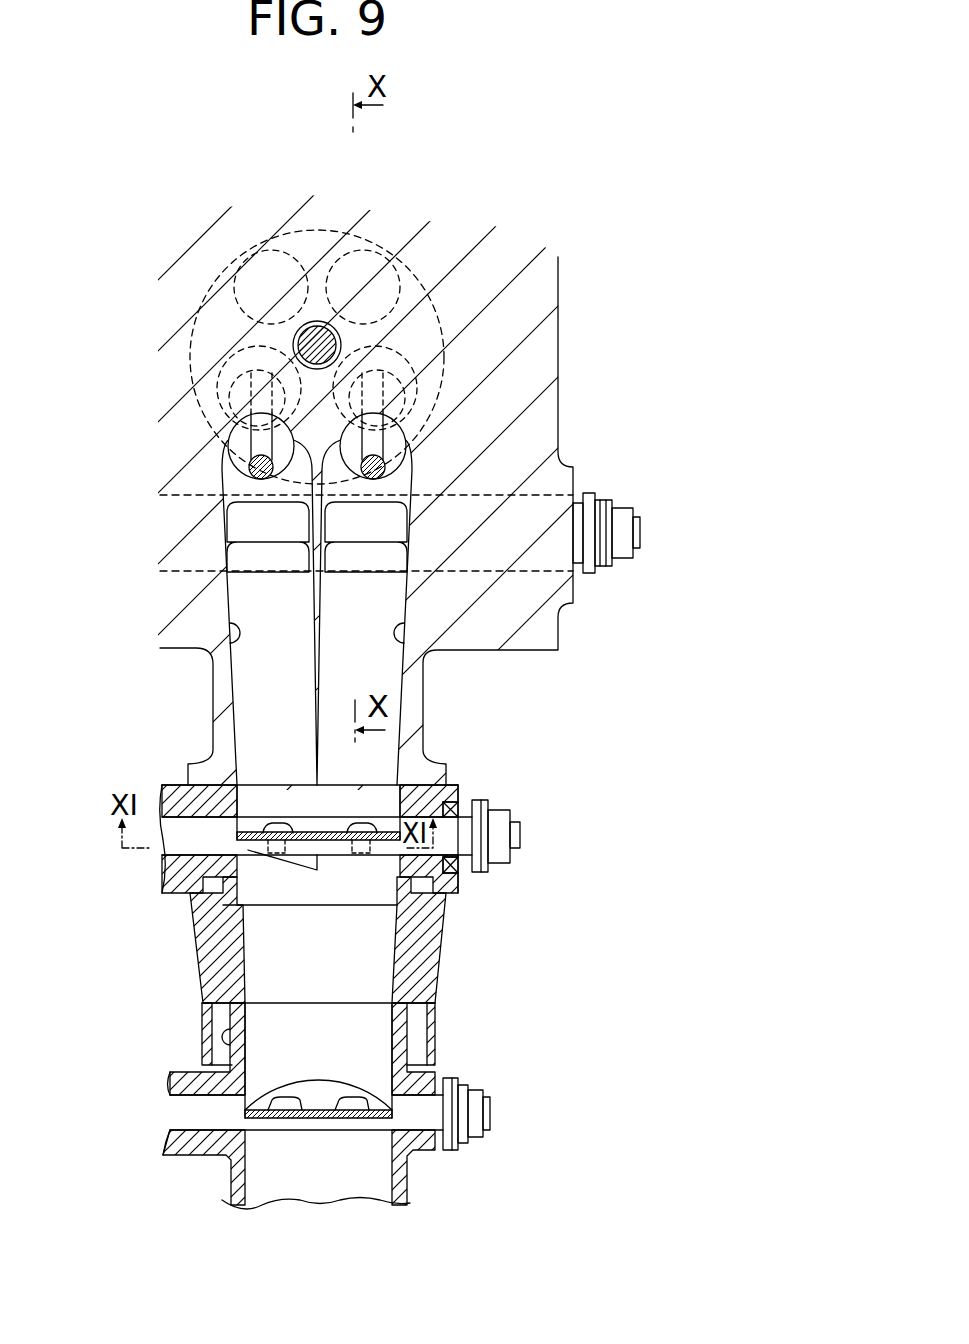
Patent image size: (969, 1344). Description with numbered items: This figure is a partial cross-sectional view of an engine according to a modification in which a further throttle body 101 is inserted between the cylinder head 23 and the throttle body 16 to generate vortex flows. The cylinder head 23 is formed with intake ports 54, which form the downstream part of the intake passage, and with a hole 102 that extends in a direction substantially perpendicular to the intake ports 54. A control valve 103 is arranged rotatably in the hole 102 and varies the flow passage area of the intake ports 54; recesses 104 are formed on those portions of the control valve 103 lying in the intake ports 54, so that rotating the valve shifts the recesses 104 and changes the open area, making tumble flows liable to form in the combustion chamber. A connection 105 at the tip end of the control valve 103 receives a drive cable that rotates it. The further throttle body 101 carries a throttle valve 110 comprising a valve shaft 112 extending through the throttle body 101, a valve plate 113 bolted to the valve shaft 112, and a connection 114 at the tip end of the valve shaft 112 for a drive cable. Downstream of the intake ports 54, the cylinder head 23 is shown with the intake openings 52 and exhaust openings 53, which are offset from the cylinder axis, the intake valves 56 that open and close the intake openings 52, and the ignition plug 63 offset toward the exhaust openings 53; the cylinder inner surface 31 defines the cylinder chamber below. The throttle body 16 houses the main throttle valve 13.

The throttle valve 13 is at (313, 1120).
The throttle body 16 is at (442, 980).
The cylinder head 23 is at (558, 393).
The cylinder inner surface 31 is at (422, 286).
The intake openings 52 is at (222, 357).
The exhaust openings 53 is at (262, 252).
The intake ports 54 is at (398, 640).
The intake valves 56 is at (376, 445).
The ignition plug 63 is at (318, 321).
The throttle body 101 is at (457, 785).
The hole 102 is at (538, 575).
The control valve 103 is at (650, 530).
The recesses 104 is at (372, 523).
The connection 105 is at (590, 497).
The throttle valve 110 is at (458, 836).
The valve shaft 112 is at (378, 858).
The valve plate 113 is at (286, 880).
The connection 114 is at (490, 802).